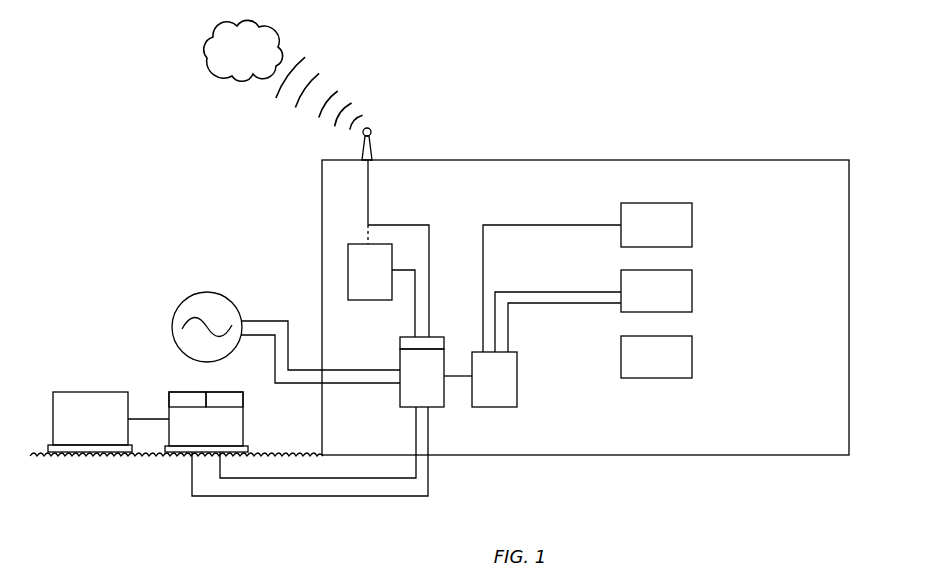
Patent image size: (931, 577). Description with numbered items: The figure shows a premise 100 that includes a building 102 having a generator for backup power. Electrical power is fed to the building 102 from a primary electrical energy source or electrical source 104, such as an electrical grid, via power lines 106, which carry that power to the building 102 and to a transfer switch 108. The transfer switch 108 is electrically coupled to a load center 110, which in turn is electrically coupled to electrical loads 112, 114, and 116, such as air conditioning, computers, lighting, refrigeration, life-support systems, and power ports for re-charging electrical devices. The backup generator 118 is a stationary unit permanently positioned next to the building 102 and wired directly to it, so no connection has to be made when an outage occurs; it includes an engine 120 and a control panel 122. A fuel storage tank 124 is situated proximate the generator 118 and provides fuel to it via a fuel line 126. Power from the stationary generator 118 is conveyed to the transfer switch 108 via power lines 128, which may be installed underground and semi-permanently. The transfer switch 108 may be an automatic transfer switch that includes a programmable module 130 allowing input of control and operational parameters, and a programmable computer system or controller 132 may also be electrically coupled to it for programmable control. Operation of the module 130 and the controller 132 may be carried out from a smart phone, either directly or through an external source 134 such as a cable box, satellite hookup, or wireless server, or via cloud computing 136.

The premise 100 is at (694, 64).
The building 102 is at (790, 159).
The electrical source 104 is at (207, 292).
The power lines 106 is at (255, 334).
The transfer switch 108 is at (400, 358).
The load center 110 is at (518, 367).
The electrical load 112 is at (693, 212).
The electrical load 114 is at (693, 278).
The electrical load 116 is at (693, 344).
The generator 118 is at (232, 427).
The engine 120 is at (175, 400).
The control panel 122 is at (235, 400).
The fuel storage tank 124 is at (78, 392).
The fuel line 126 is at (148, 422).
The power lines 128 is at (280, 479).
The programmable module 130 is at (400, 343).
The controller 132 is at (357, 243).
The external source 134 is at (374, 148).
The cloud computing 136 is at (258, 60).